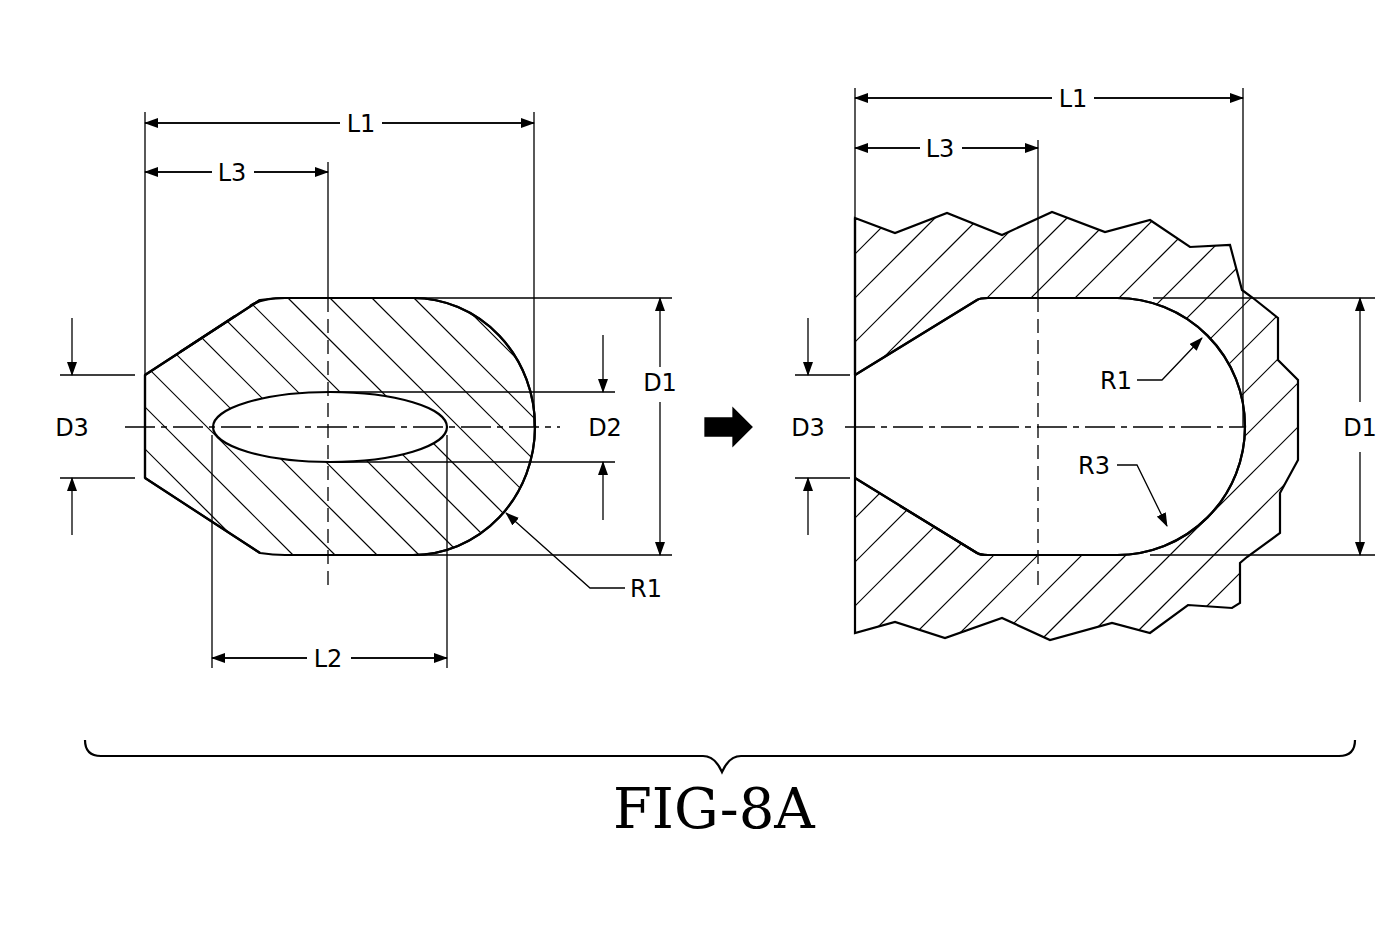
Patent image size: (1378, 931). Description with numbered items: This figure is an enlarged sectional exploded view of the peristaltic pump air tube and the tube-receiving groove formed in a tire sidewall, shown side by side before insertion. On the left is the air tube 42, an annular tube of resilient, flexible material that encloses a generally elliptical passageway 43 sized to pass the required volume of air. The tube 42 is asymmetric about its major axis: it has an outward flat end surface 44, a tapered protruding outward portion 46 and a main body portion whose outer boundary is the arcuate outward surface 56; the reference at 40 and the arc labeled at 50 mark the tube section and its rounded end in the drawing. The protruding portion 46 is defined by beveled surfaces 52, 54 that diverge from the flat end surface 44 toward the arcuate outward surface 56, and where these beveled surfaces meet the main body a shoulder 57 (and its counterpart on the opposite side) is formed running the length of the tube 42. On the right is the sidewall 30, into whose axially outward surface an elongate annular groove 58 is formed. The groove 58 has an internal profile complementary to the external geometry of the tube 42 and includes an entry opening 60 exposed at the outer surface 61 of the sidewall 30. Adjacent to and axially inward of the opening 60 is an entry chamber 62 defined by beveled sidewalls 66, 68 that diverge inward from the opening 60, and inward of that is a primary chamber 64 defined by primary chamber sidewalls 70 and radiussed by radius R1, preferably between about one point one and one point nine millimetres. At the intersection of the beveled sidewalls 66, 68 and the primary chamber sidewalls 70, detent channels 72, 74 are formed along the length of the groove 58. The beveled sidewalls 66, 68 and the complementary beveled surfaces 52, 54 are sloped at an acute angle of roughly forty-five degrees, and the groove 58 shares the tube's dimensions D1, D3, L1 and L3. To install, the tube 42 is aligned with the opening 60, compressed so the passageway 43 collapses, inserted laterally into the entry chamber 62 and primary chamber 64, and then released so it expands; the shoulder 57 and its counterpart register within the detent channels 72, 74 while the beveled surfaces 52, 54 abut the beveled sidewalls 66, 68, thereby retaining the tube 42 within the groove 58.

The sidewall 30 is at (853, 598).
The insert 40 is at (389, 296).
The air tube 42 is at (486, 534).
The passageway 43 is at (307, 436).
The flat end surface 44 is at (140, 402).
The tapered protruding outward portion 46 is at (190, 336).
The rounded end upper portion 50 is at (538, 414).
The beveled surface 52 is at (220, 323).
The beveled surface 54 is at (177, 502).
The arcuate outward surface 56 is at (383, 557).
The shoulder 57 is at (262, 300).
The groove 58 is at (1069, 521).
The entry opening 60 is at (890, 450).
The outer surface 61 is at (855, 257).
The entry chamber 62 is at (943, 479).
The primary chamber 64 is at (1186, 478).
The beveled sidewall 66 is at (898, 514).
The beveled sidewall 68 is at (896, 338).
The primary chamber sidewalls 70 is at (1080, 298).
The detent channel 72 is at (990, 553).
The detent channel 74 is at (983, 298).